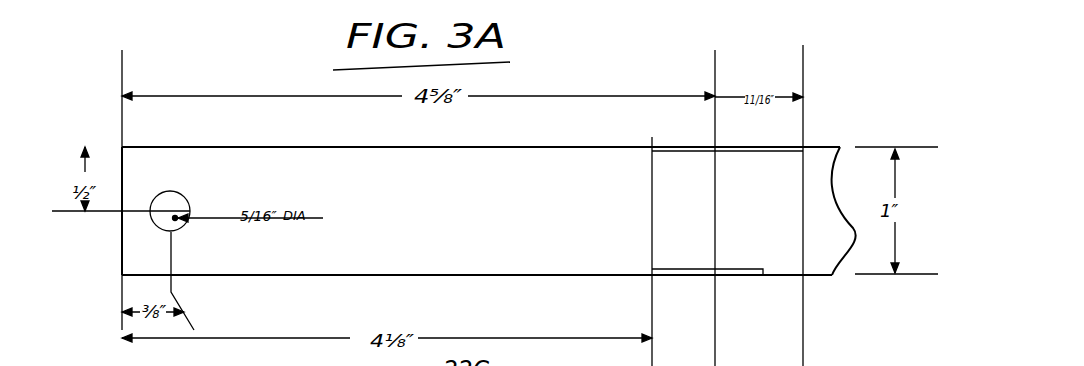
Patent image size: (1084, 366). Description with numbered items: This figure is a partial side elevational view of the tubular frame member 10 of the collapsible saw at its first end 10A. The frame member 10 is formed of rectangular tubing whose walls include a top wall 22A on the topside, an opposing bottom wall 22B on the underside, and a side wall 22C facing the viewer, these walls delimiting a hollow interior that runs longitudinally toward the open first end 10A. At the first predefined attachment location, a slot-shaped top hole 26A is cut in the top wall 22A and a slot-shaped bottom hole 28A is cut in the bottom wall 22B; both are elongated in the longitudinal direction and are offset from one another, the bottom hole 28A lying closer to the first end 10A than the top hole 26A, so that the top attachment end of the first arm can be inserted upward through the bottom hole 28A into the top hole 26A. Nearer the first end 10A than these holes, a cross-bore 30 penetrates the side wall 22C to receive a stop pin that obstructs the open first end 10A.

The frame member 10 is at (559, 169).
The first end 10A is at (118, 250).
The top wall 22A is at (287, 146).
The bottom wall 22B is at (355, 275).
The side wall 22C is at (470, 220).
The top hole 26A is at (754, 151).
The bottom hole 28A is at (753, 268).
The cross-bore 30 is at (178, 205).